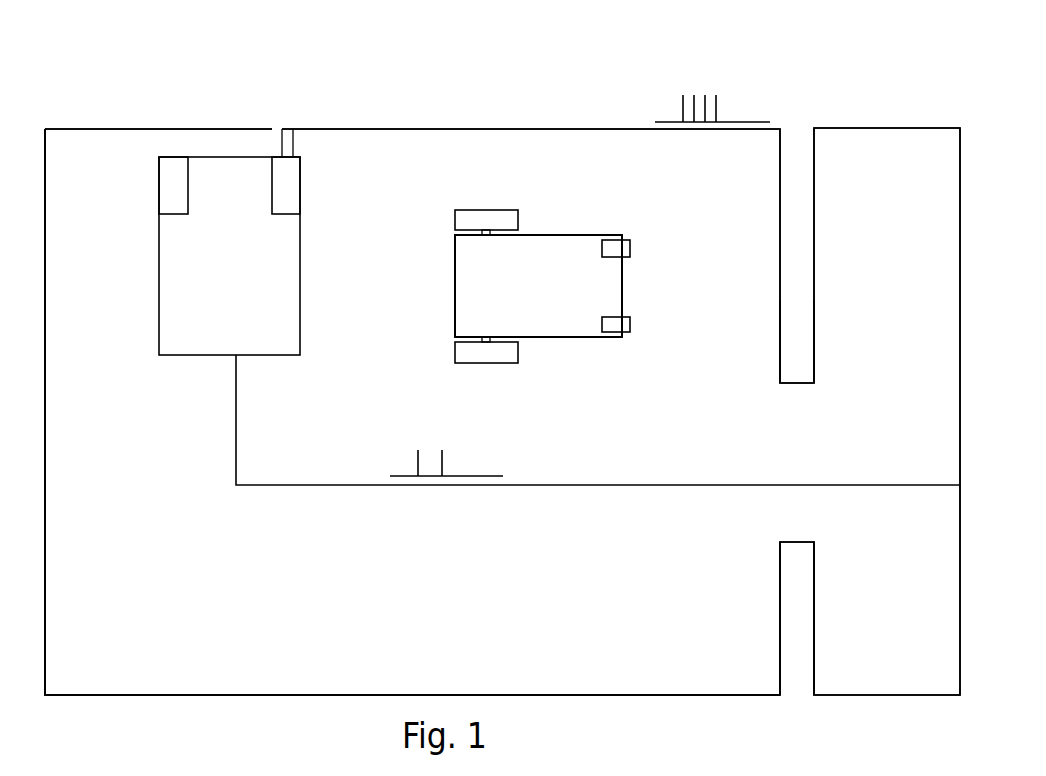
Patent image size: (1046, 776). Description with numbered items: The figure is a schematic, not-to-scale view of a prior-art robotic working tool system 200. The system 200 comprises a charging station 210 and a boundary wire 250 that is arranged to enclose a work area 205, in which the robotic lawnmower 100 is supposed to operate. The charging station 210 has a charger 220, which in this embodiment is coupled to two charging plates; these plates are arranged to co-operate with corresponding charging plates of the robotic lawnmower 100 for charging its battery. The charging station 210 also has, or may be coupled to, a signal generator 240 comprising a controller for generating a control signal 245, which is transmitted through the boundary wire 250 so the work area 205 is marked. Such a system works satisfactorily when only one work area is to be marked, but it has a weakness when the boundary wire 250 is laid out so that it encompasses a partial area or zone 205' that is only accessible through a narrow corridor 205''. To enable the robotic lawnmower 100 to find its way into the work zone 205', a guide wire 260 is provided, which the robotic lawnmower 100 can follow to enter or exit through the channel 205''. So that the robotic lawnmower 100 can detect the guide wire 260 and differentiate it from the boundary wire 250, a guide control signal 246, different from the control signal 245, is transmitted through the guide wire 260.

The robotic lawnmower 100 is at (520, 340).
The robotic working tool system 200 is at (150, 147).
The work area 205 is at (412, 384).
The partial area or zone 205' is at (887, 411).
The narrow corridor 205'' is at (837, 497).
The charging station 210 is at (159, 214).
The charger 220 is at (170, 165).
The signal generator 240 is at (302, 197).
The control signal 245 is at (712, 108).
The guide control signal 246 is at (447, 462).
The boundary wire 250 is at (137, 694).
The guide wire 260 is at (240, 390).